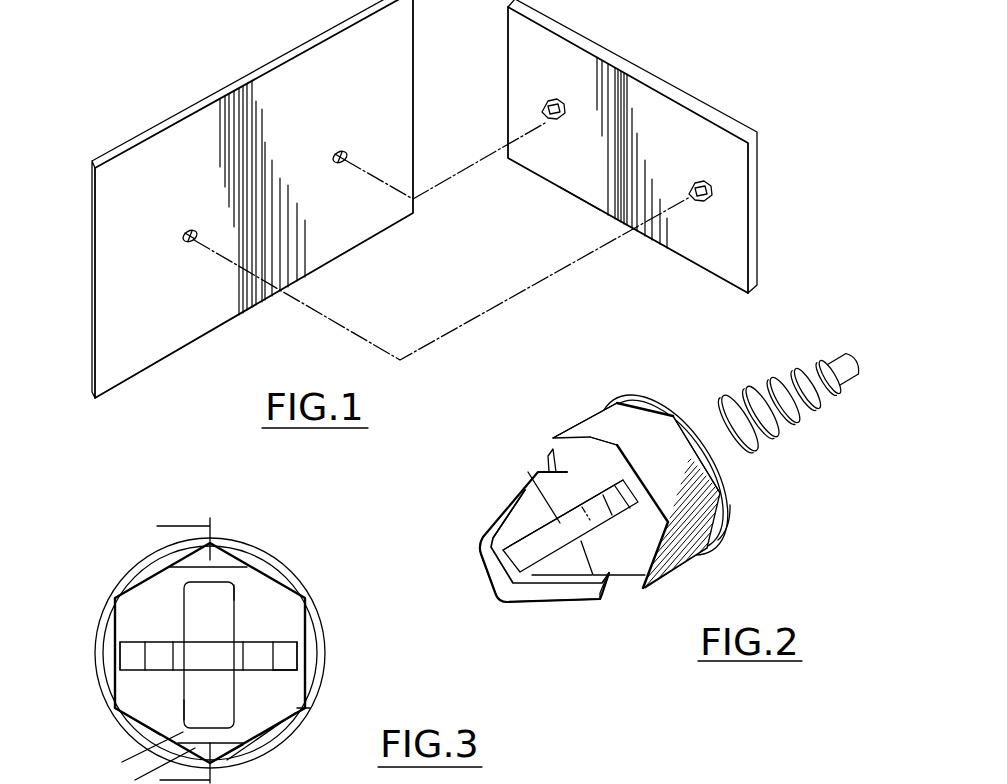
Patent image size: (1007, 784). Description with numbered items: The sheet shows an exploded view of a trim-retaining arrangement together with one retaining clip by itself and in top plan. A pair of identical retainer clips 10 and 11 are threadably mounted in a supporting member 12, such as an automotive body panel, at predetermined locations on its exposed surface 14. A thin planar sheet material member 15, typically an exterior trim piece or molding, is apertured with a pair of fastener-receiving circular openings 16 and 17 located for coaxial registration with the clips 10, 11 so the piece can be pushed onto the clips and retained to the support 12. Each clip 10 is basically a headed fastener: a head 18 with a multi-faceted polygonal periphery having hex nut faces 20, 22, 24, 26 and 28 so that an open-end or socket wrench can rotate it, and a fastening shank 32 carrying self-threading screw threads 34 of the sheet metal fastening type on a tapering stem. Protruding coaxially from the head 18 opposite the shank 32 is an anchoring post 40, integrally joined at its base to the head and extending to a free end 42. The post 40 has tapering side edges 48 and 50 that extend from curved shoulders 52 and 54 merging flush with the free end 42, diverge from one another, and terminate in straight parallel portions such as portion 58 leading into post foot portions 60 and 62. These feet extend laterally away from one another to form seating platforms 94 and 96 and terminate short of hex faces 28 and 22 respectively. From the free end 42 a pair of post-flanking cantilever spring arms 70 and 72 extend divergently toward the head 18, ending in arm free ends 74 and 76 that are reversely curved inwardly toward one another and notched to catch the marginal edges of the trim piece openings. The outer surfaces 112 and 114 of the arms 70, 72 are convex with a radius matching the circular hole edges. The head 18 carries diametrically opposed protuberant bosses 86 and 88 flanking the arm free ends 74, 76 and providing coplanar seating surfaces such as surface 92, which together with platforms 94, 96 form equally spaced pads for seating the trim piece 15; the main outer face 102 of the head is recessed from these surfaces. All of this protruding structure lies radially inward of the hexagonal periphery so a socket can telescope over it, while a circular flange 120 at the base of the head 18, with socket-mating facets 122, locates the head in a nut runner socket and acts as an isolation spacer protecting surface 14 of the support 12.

In FIG. 1, the retainer clip 10 is at (703, 181).
In FIG. 2, the retainer clip 10 is at (528, 445).
In FIG. 3, the retainer clip 10 is at (92, 550).
In FIG. 1, the retainer clip 11 is at (556, 98).
In FIG. 1, the supporting member 12 is at (668, 80).
In FIG. 1, the exposed surface 14 is at (583, 190).
In FIG. 1, the planar sheet material member 15 is at (220, 88).
In FIG. 1, the through-hole circular opening 16 is at (194, 231).
In FIG. 1, the through-hole circular opening 17 is at (344, 152).
In FIG. 2, the head 18 is at (584, 414).
In FIG. 2, the hex nut face 20 is at (614, 398).
In FIG. 2, the hex nut face 22 is at (727, 492).
In FIG. 3, the hex nut face 22 is at (305, 643).
In FIG. 2, the hex nut face 24 is at (704, 556).
In FIG. 3, the hex nut face 24 is at (280, 740).
In FIG. 3, the hex nut face 26 is at (137, 722).
In FIG. 3, the hex nut face 28 is at (110, 650).
In FIG. 2, the fastening shank 32 is at (742, 379).
In FIG. 2, the self threading-screw threads 34 is at (812, 412).
In FIG. 2, the anchoring post 40 is at (587, 540).
In FIG. 3, the anchoring post 40 is at (130, 640).
In FIG. 2, the free end 42 is at (482, 578).
In FIG. 3, the free end 42 is at (192, 629).
In FIG. 3, the tapering side edge 48 is at (163, 642).
In FIG. 2, the tapering side edge 50 is at (549, 474).
In FIG. 3, the tapering side edge 50 is at (252, 643).
In FIG. 3, the curved shoulder 52 is at (176, 643).
In FIG. 2, the curved shoulder 54 is at (517, 537).
In FIG. 3, the curved shoulder 54 is at (238, 671).
In FIG. 2, the straight parallel portion 58 is at (590, 500).
In FIG. 3, the post foot portion 60 is at (122, 684).
In FIG. 2, the post foot portion 62 is at (627, 512).
In FIG. 3, the post foot portion 62 is at (293, 670).
In FIG. 2, the spring arm 70 is at (557, 610).
In FIG. 3, the spring arm 70 is at (260, 573).
In FIG. 2, the spring arm 72 is at (514, 490).
In FIG. 3, the spring arm 72 is at (242, 595).
In FIG. 2, the arm free end 74 is at (612, 580).
In FIG. 2, the arm free end 76 is at (550, 452).
In FIG. 2, the protuberant boss 86 is at (660, 582).
In FIG. 3, the protuberant boss 86 is at (243, 762).
In FIG. 2, the protuberant boss 88 is at (568, 437).
In FIG. 3, the protuberant boss 88 is at (193, 553).
In FIG. 3, the seating surface 92 is at (214, 567).
In FIG. 3, the seating platform 94 is at (125, 660).
In FIG. 3, the seating platform 96 is at (296, 639).
In FIG. 2, the main outer face 102 is at (620, 447).
In FIG. 3, the main outer face 102 is at (297, 708).
In FIG. 3, the outer surface 112 is at (122, 762).
In FIG. 3, the outer surface 114 is at (212, 579).
In FIG. 2, the circular flange 120 is at (737, 522).
In FIG. 3, the circular flange 120 is at (325, 636).
In FIG. 2, the socket-mating facets 122 is at (647, 398).